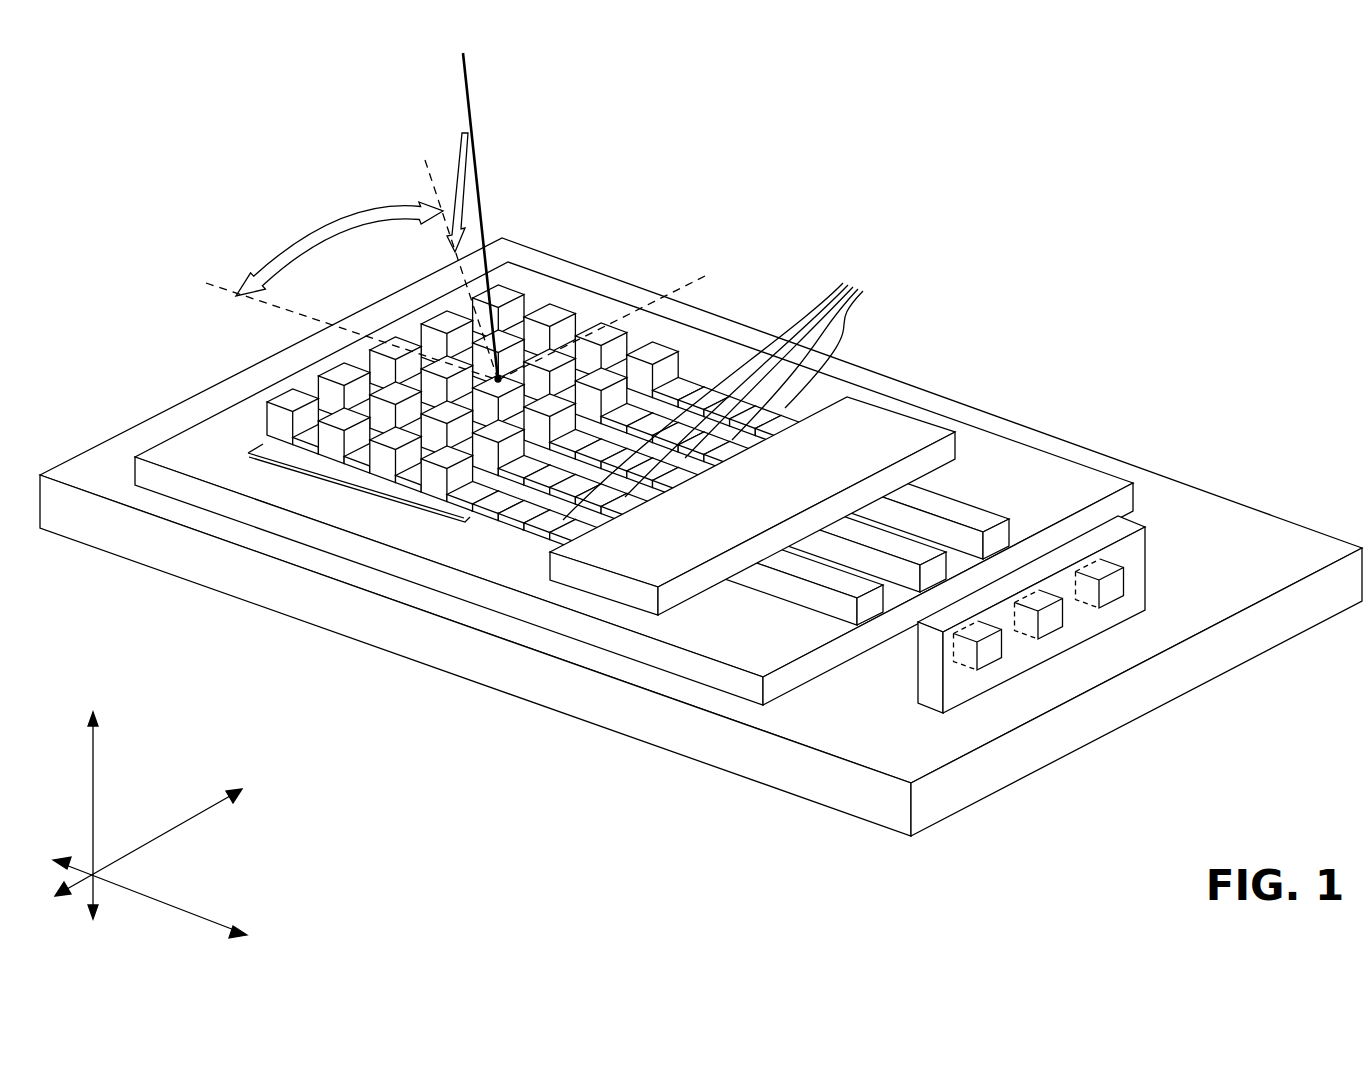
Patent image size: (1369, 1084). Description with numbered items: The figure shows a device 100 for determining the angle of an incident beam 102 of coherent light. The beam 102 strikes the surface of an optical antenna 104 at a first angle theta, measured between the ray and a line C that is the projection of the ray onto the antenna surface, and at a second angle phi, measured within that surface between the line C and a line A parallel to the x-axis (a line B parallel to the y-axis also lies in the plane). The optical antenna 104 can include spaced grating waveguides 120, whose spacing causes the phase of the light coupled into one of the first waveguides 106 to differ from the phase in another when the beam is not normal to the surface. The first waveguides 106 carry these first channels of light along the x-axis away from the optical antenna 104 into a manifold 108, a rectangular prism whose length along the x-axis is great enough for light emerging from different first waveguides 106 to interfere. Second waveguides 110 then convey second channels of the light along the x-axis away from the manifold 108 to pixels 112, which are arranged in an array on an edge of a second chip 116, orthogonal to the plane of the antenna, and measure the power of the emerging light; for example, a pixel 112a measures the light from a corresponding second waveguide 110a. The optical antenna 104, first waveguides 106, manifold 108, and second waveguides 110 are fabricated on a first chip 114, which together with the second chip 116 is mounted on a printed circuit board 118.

The device 100 is at (155, 75).
The incident beam 102 is at (470, 91).
The optical antenna 104 is at (540, 422).
The first waveguides 106 is at (721, 390).
The manifold 108 is at (868, 430).
The second waveguides 110 is at (822, 577).
The second waveguide 110a is at (983, 520).
The pixels 112 is at (997, 643).
The pixel 112a is at (1118, 575).
The first chip 114 is at (683, 663).
The second chip 116 is at (932, 690).
The printed circuit board 118 is at (770, 763).
The spaced grating waveguides 120 is at (343, 488).